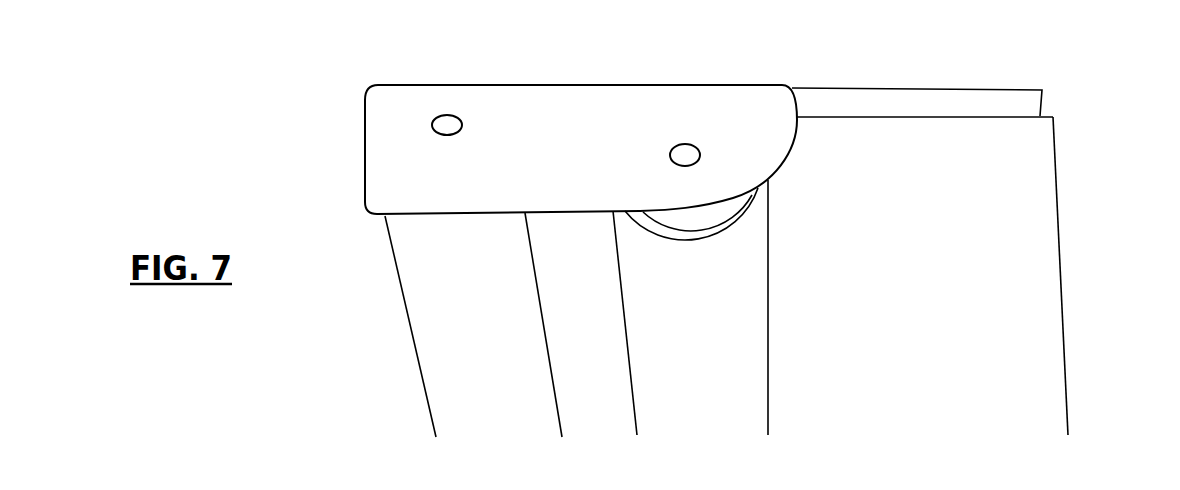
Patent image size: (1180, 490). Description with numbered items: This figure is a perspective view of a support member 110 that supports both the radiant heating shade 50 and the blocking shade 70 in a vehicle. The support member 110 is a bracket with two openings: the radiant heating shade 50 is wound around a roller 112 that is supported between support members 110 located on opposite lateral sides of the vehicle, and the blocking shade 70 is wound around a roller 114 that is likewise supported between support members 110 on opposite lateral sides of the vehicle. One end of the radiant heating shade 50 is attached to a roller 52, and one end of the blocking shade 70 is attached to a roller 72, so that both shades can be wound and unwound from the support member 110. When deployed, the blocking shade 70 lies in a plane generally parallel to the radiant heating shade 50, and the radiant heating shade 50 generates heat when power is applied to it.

The support member 110 is at (532, 85).
The roller 112 is at (688, 144).
The roller 114 is at (450, 115).
The blocking shade 70 is at (972, 88).
The radiant heating shade 50 is at (1020, 218).
The roller 72 is at (496, 346).
The roller 52 is at (721, 291).